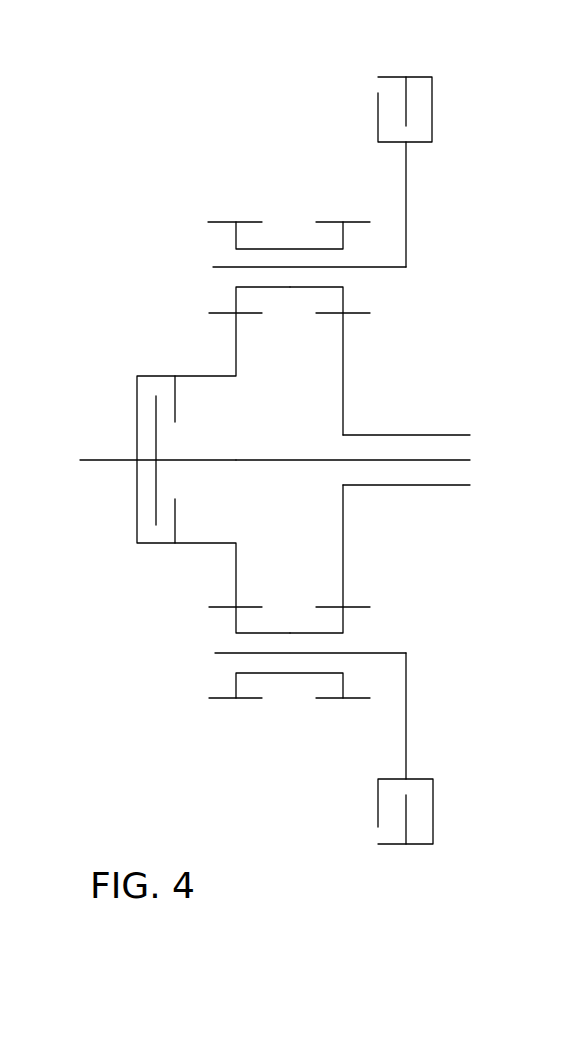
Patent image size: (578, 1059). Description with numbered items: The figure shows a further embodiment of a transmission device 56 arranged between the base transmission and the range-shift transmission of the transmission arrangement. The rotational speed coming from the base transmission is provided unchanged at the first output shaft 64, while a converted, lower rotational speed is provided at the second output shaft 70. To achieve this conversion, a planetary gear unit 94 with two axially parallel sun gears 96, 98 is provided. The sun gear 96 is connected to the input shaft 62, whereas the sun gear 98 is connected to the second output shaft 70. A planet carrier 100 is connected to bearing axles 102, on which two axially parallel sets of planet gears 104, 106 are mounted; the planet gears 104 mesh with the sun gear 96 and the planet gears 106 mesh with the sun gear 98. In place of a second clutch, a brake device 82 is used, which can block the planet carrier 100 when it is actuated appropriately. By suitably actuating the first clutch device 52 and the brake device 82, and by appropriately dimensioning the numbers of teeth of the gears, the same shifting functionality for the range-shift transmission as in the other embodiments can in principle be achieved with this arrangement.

The first clutch device 52 is at (155, 514).
The transmission device 56 is at (198, 52).
The input shaft 62 is at (110, 459).
The first output shaft 64 is at (455, 457).
The second output shaft 70 is at (422, 435).
The brake device 82 is at (420, 98).
The planetary gear unit 94 is at (335, 158).
The sun gear 96 is at (236, 352).
The sun gear 98 is at (343, 367).
The planet carrier 100 is at (406, 210).
The bearing axles 102 is at (405, 267).
The planet gears 104 is at (235, 240).
The planet gears 106 is at (343, 625).